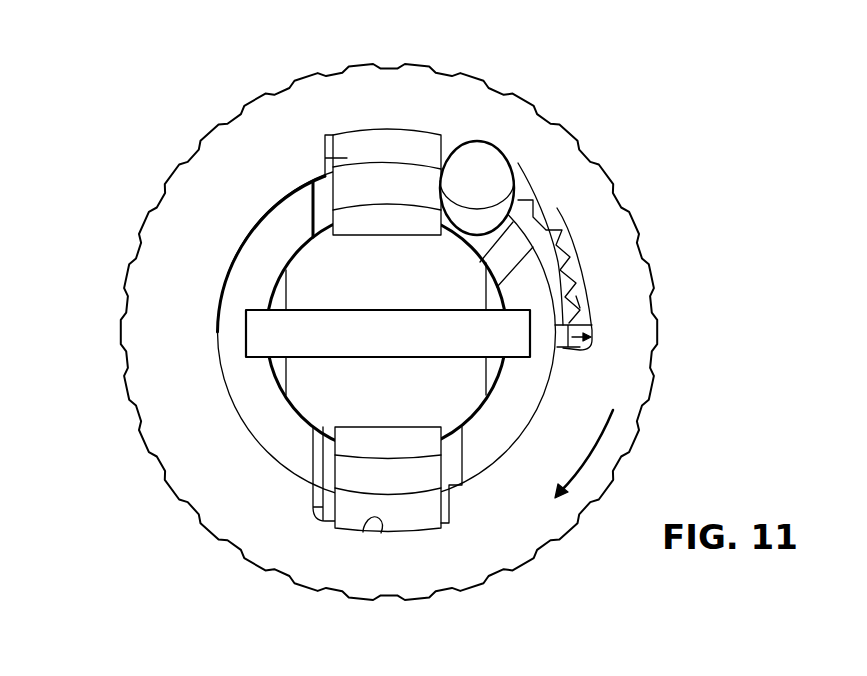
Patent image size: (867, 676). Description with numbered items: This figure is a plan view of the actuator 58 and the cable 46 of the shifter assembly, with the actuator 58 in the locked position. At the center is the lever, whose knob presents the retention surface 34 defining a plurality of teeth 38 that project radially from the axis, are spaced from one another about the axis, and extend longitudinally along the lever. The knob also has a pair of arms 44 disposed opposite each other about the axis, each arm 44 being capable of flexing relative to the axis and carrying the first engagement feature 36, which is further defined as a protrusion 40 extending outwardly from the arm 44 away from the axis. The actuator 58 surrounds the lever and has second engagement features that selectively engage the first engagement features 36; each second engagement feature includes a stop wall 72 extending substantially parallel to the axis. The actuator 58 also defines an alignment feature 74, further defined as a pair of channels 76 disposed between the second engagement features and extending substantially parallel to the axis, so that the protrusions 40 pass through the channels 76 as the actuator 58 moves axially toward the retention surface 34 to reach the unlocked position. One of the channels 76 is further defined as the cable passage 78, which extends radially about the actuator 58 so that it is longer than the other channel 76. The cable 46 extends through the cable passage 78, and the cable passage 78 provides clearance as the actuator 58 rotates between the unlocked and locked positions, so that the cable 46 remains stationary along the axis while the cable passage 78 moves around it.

The retention surface 34 is at (560, 208).
The first engagement feature 36 is at (360, 130).
The teeth 38 is at (578, 258).
The protrusion 40 is at (327, 158).
The arm 44 is at (392, 182).
The cable 46 is at (478, 172).
The actuator 58 is at (233, 143).
The stop wall 72 is at (340, 176).
The alignment feature 74 is at (558, 348).
The channel 76 is at (580, 308).
The cable passage 78 is at (520, 180).